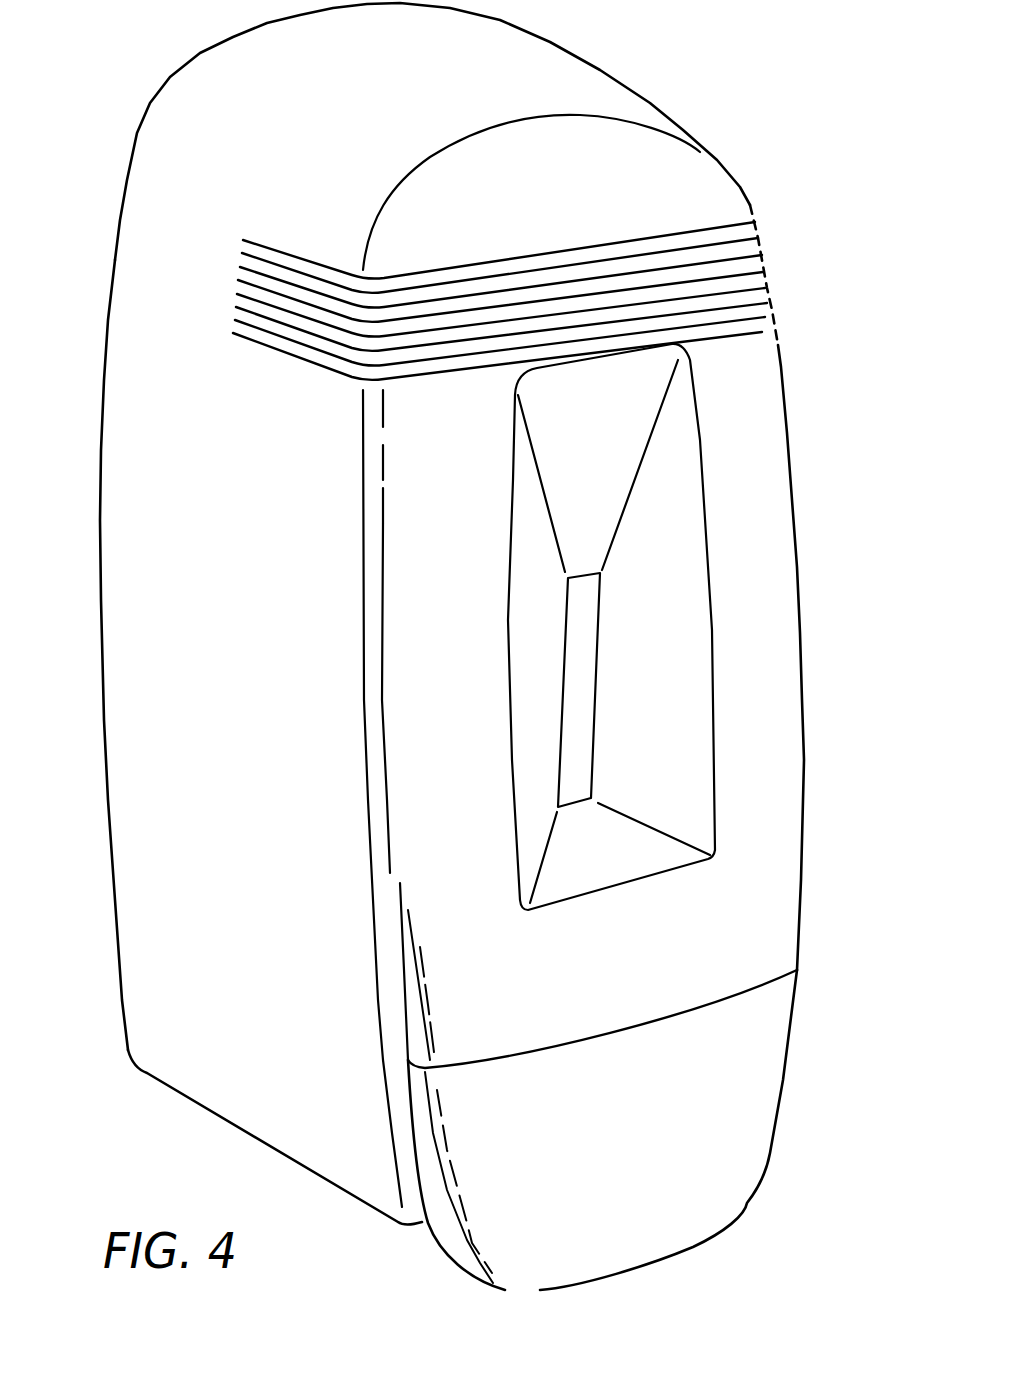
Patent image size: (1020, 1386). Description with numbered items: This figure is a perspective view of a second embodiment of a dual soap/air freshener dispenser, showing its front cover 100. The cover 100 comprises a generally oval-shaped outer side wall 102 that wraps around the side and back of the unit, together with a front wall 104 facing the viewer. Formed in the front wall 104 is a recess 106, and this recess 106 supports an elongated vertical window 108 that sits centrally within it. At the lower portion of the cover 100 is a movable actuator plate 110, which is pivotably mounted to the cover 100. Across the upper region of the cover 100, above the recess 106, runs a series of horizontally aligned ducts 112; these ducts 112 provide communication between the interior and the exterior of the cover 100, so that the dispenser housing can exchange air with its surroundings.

The front cover 100 is at (796, 86).
The outer side wall 102 is at (172, 790).
The front wall 104 is at (768, 872).
The recess 106 is at (675, 638).
The elongated vertical window 108 is at (585, 597).
The movable actuator plate 110 is at (770, 1153).
The ducts 112 is at (735, 278).